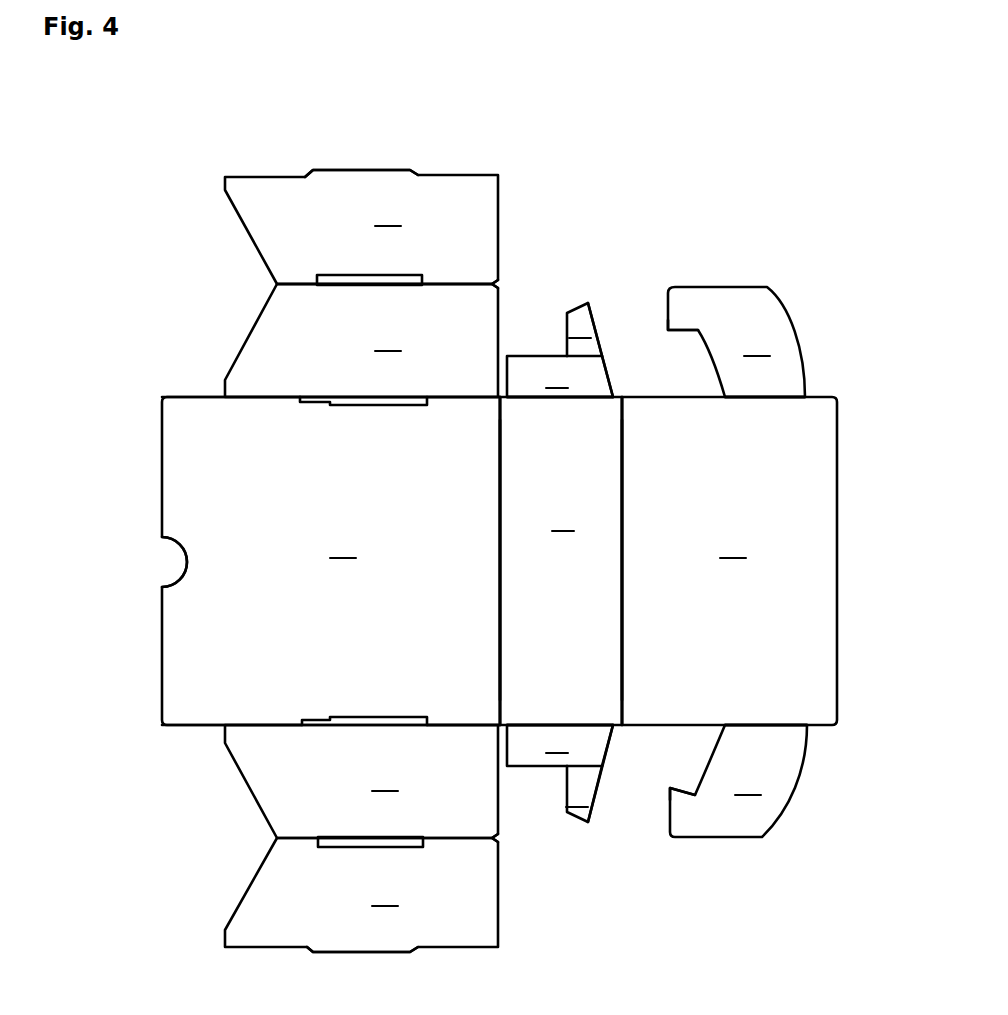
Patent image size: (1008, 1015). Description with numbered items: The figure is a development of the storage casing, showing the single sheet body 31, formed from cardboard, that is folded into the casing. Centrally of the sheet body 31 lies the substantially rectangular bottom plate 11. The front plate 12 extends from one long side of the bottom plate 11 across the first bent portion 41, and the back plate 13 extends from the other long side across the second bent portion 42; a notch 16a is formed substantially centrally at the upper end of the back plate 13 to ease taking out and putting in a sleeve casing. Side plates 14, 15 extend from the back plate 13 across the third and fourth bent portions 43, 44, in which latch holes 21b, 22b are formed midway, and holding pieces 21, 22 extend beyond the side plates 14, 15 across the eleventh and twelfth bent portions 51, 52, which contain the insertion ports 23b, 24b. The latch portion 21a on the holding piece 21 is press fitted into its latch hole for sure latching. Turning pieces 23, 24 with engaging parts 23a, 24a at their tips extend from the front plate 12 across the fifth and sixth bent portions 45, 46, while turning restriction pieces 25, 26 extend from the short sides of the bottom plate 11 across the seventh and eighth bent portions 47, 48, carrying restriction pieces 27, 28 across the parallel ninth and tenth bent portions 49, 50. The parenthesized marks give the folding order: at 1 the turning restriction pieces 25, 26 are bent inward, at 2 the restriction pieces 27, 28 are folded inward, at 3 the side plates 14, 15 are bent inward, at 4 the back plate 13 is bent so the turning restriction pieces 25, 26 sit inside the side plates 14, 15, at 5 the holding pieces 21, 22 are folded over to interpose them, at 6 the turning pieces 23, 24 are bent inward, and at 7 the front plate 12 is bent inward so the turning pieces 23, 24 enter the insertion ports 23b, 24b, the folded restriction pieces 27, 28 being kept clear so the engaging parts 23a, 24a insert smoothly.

The sheet body 31 is at (719, 178).
The bottom plate 11 is at (561, 561).
The front plate 12 is at (729, 561).
The back plate 13 is at (331, 561).
The side plate 14 is at (361, 340).
The side plate 15 is at (361, 781).
The notch 16a is at (166, 557).
The holding piece 21 is at (361, 227).
The latch portion 21a is at (400, 172).
The latch hole 21b is at (363, 403).
The holding piece 22 is at (361, 895).
The latch hole 22b is at (380, 716).
The turning piece 23 is at (736, 342).
The engaging part 23a is at (665, 330).
The insertion port 23b is at (372, 281).
The turning piece 24 is at (738, 781).
The engaging part 24a is at (677, 828).
The insertion port 24b is at (403, 841).
The turning restriction piece 25 is at (560, 376).
The turning restriction piece 26 is at (560, 745).
The restriction piece 27 is at (584, 329).
The restriction piece 28 is at (583, 794).
The first bent portion 41 is at (623, 520).
The second bent portion 42 is at (502, 486).
The third bent portion 43 is at (473, 398).
The fourth bent portion 44 is at (448, 722).
The fifth bent portion 45 is at (782, 403).
The sixth bent portion 46 is at (783, 722).
The seventh bent portion 47 is at (580, 402).
The eighth bent portion 48 is at (568, 722).
The ninth bent portion 49 is at (591, 355).
The tenth bent portion 50 is at (600, 764).
The eleventh bent portion 51 is at (455, 286).
The twelfth bent portion 52 is at (463, 840).
The first folding step 1 is at (558, 551).
The second folding step 2 is at (585, 571).
The third folding step 3 is at (232, 574).
The fourth folding step 4 is at (482, 560).
The fifth folding step 5 is at (382, 574).
The sixth folding step 6 is at (766, 552).
The seventh folding step 7 is at (637, 560).